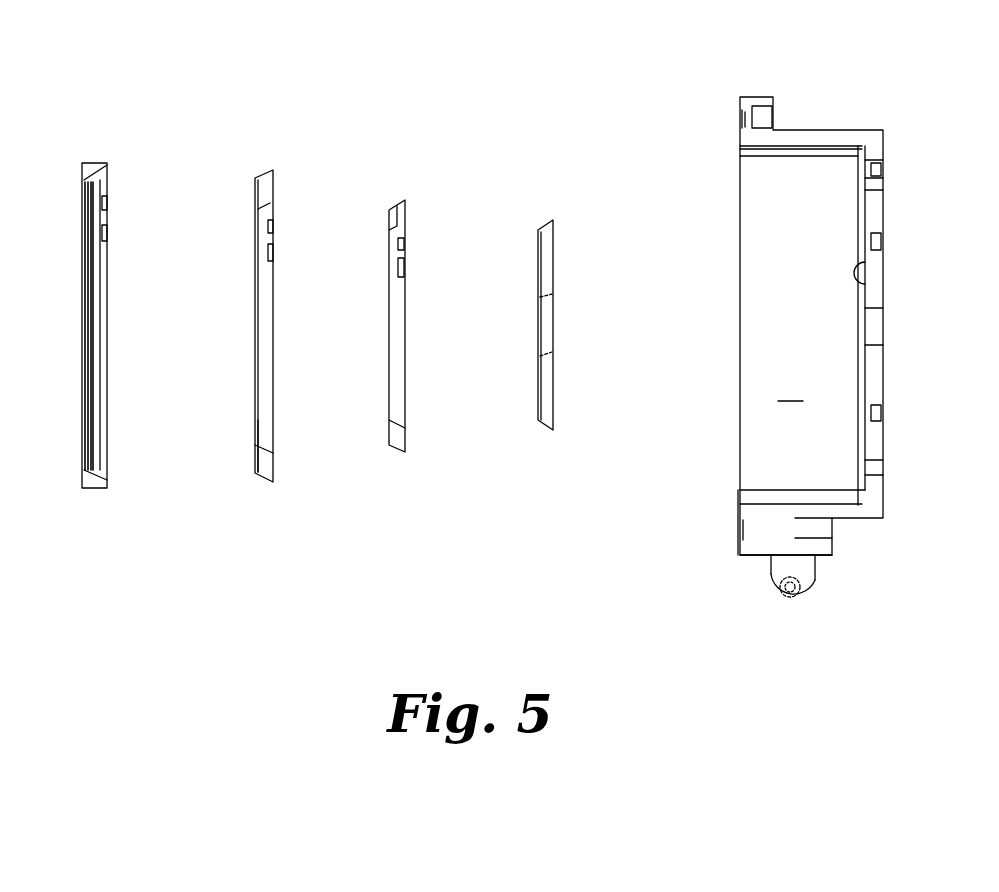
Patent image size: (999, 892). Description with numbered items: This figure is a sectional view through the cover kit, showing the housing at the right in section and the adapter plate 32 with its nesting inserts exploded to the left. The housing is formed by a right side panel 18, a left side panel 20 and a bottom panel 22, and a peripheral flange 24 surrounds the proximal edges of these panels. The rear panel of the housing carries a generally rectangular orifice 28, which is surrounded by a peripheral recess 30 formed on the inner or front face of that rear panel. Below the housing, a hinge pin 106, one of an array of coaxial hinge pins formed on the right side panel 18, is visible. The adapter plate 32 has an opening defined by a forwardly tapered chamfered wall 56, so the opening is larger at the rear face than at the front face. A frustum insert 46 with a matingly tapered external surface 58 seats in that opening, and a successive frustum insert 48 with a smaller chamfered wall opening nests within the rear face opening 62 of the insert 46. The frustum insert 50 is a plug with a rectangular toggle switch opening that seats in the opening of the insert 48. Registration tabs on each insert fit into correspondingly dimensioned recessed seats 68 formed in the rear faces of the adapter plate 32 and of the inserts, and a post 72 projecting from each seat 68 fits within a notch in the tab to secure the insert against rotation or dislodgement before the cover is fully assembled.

The right side panel 18 is at (858, 520).
The left side panel 20 is at (826, 131).
The bottom panel 22 is at (790, 389).
The peripheral flange 24 is at (761, 97).
The orifice 28 is at (876, 378).
The peripheral recess 30 is at (865, 262).
The adapter plate 32 is at (101, 165).
The frustum insert 46 is at (273, 463).
The frustum insert 48 is at (405, 440).
The frustum insert 50 is at (553, 405).
The chamfered wall 56 is at (92, 471).
The tapered external surface 58 is at (268, 178).
The opening 62 is at (264, 410).
The recessed seat 68 is at (107, 198).
The post 72 is at (107, 215).
The hinge pin 106 is at (792, 590).